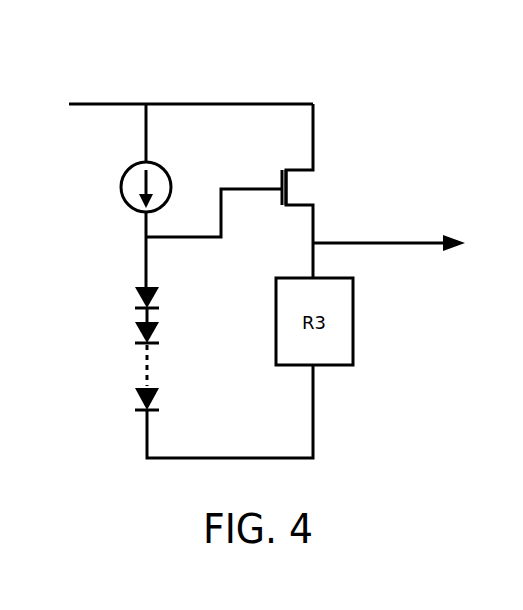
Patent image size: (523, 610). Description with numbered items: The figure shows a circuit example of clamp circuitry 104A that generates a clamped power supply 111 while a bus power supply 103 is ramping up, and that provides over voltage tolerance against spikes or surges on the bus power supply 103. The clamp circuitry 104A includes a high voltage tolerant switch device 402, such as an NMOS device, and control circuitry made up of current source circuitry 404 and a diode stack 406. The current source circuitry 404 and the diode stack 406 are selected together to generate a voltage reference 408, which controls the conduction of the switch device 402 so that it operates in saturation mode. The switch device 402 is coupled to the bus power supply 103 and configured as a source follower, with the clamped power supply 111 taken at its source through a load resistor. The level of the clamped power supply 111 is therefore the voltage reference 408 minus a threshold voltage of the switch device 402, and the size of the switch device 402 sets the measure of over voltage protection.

The clamp circuitry 104A is at (168, 40).
The bus power supply 103 is at (103, 104).
The current source circuitry 404 is at (171, 173).
The high voltage tolerant switch device 402 is at (308, 194).
The voltage reference 408 is at (183, 237).
The clamped power supply 111 is at (388, 243).
The diode stack 406 is at (122, 345).